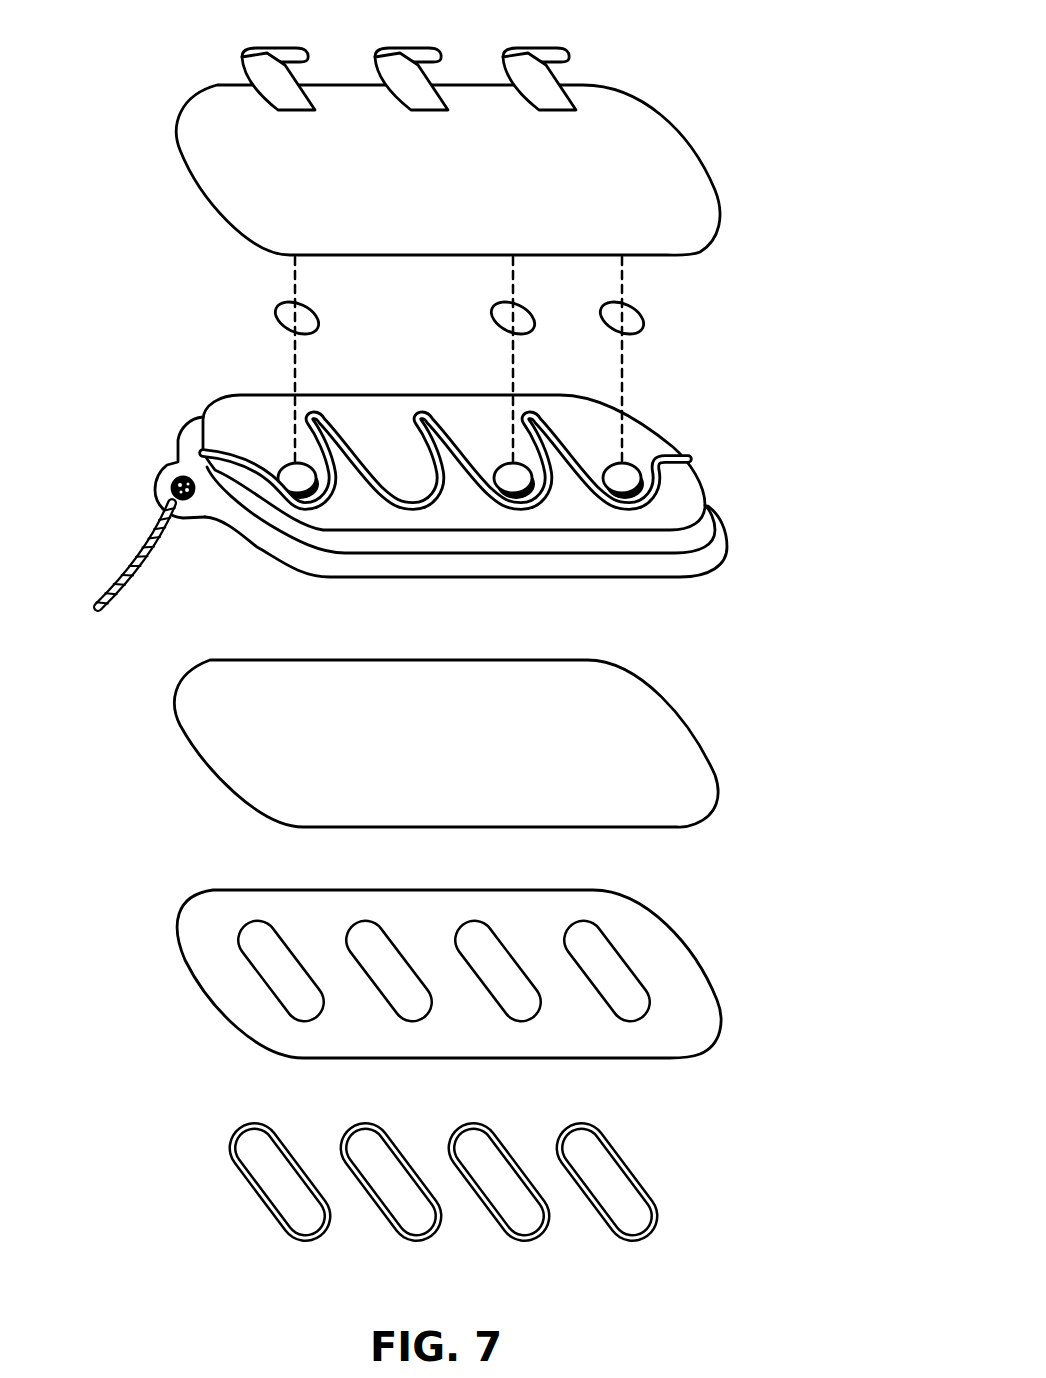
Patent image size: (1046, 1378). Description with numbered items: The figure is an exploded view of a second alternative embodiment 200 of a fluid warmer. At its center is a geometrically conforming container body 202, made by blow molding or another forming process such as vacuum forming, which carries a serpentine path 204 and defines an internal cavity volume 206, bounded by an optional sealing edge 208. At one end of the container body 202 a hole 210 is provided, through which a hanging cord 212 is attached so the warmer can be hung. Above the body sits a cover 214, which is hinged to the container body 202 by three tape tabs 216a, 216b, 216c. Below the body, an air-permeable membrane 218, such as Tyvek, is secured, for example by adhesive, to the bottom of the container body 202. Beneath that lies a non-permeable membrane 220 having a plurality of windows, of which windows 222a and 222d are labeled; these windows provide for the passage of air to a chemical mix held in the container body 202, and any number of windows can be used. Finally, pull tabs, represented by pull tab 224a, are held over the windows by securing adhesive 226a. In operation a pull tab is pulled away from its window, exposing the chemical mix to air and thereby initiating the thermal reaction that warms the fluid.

The second alternative embodiment 200 is at (836, 0).
The container body 202 is at (483, 462).
The serpentine path 204 is at (507, 482).
The internal cavity volume 206 is at (461, 541).
The sealing edge 208 is at (496, 563).
The hole 210 is at (132, 467).
The hanging cord 212 is at (110, 555).
The cover 214 is at (453, 160).
The tape tab 216a is at (232, 56).
The tape tab 216b is at (366, 56).
The tape tab 216c is at (497, 56).
The air-permeable membrane 218 is at (492, 743).
The non-permeable membrane 220 is at (450, 979).
The window 222a is at (209, 928).
The window 222d is at (539, 928).
The pull tab 224a is at (306, 1215).
The securing adhesive 226a is at (343, 1215).